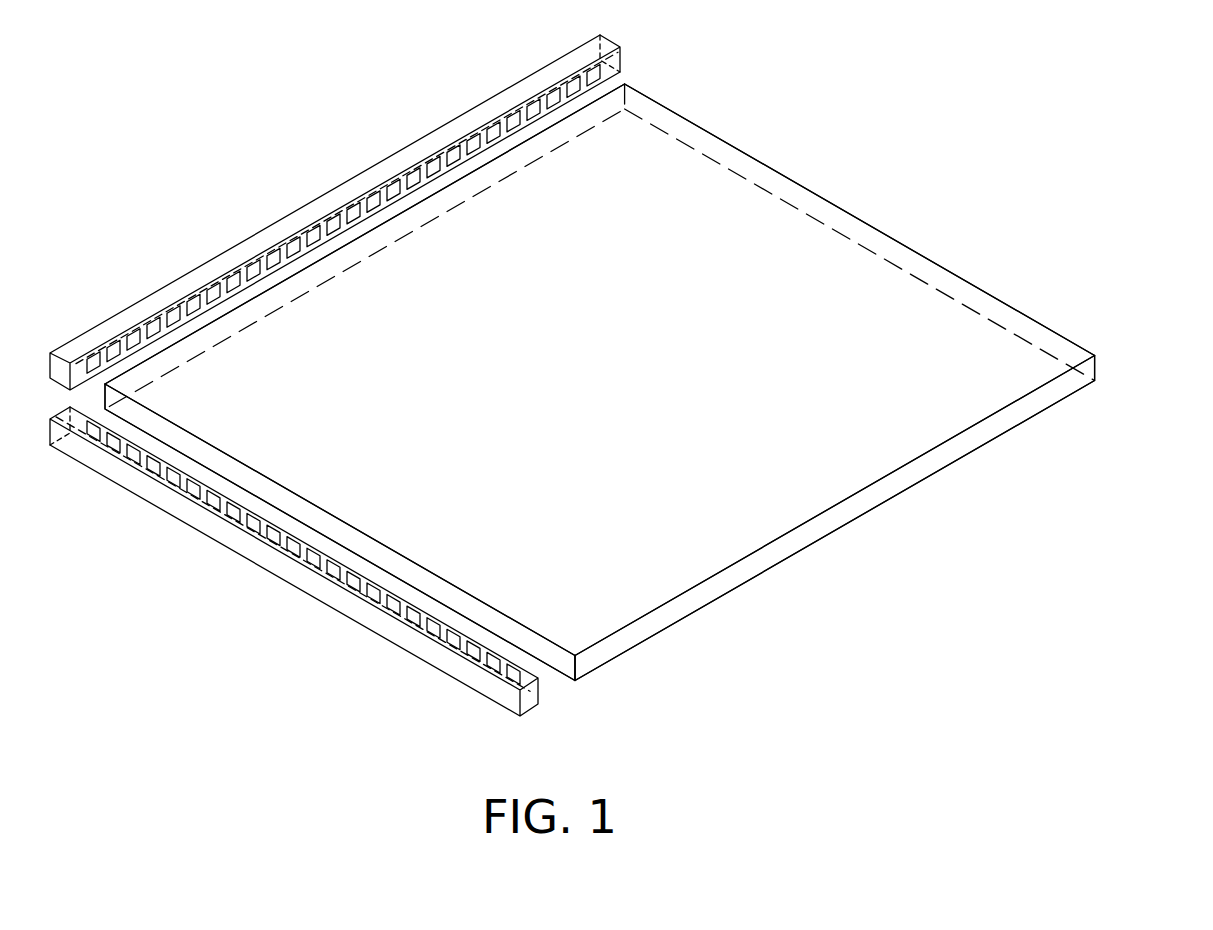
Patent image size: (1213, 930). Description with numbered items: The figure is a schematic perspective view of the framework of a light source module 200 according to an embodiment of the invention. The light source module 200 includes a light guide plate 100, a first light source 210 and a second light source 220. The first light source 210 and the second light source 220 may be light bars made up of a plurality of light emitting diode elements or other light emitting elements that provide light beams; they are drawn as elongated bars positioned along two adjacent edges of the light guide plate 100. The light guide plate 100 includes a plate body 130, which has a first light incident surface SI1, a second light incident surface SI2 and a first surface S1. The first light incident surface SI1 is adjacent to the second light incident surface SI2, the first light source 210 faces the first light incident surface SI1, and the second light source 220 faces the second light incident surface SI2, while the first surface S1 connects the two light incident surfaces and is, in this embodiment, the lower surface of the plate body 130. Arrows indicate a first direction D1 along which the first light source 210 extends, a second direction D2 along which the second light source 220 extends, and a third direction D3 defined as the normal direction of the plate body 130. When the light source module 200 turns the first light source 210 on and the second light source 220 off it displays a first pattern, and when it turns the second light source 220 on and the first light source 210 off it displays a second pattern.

The light guide plate 100 is at (611, 374).
The plate body 130 is at (1048, 342).
The first light source 210 is at (511, 92).
The second light source 220 is at (541, 706).
The first surface S1 is at (1046, 422).
The first light incident surface SI1 is at (599, 120).
The second light incident surface SI2 is at (549, 652).
The first direction D1 is at (351, 120).
The second direction D2 is at (223, 598).
The third direction D3 is at (1152, 320).
The light source module 200 is at (1072, 736).